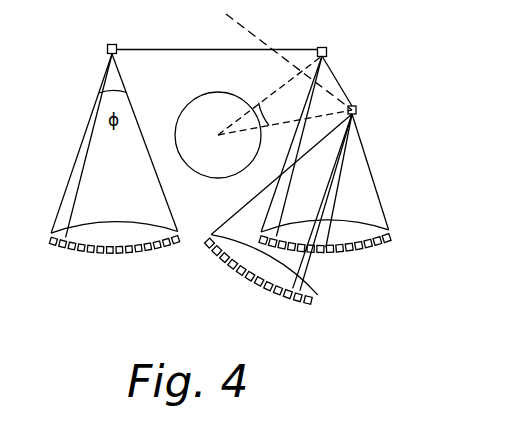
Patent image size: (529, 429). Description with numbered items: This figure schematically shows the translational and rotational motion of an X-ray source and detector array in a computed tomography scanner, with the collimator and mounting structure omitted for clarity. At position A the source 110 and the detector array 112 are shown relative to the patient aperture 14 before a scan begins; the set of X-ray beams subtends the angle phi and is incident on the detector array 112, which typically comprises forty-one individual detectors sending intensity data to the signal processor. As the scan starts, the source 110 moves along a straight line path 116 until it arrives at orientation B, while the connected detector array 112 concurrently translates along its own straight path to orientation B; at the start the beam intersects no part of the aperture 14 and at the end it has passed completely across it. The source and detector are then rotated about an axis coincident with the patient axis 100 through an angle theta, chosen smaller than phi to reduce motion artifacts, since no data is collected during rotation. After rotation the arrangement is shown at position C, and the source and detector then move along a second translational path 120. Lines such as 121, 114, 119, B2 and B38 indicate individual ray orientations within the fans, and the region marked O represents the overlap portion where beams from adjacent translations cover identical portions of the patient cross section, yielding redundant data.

The source 110 is at (117, 45).
The straight line path 116 is at (197, 49).
The second translational path 120 is at (263, 29).
The aperture 14 is at (200, 94).
The patient axis 100 is at (218, 139).
The fan edge ray 121 is at (70, 170).
The detector array 112 is at (54, 246).
The ray 119 is at (336, 200).
The fan edge ray 114 is at (374, 183).
The position A is at (96, 113).
The orientation B is at (341, 83).
The position C is at (248, 233).
The overlap portion O is at (330, 224).
The beam ray B2 is at (79, 183).
The beam ray pair B38 is at (301, 279).